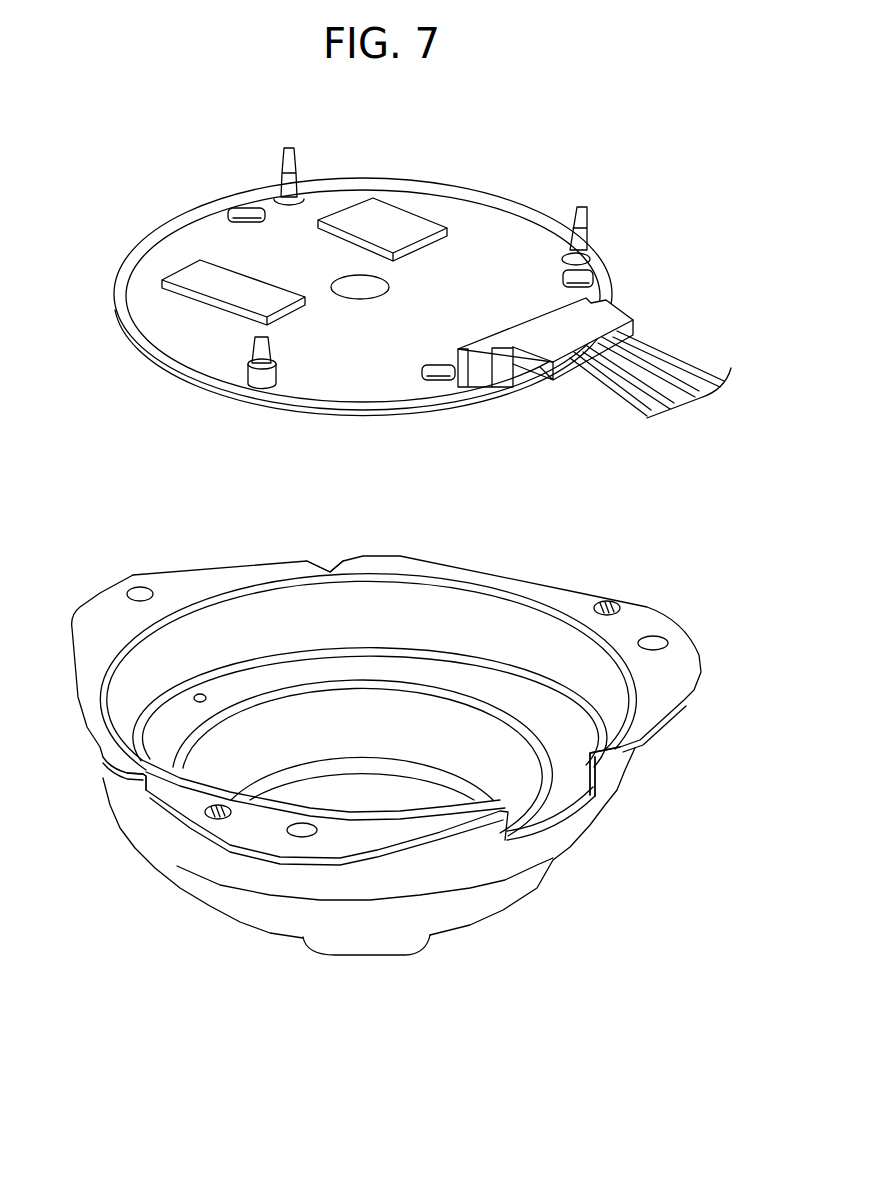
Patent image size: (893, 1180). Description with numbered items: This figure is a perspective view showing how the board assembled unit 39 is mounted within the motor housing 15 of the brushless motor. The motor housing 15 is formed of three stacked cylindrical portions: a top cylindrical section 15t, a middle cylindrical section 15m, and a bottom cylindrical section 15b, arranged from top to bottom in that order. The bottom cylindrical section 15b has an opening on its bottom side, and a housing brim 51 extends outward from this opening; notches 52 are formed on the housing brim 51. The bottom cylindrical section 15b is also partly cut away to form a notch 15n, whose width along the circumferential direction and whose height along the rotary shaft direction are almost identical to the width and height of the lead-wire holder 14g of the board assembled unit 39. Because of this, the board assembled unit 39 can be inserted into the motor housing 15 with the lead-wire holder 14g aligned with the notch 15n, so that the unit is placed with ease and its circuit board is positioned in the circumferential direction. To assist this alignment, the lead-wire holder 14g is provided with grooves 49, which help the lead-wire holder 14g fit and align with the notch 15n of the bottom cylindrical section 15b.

The board assembled unit 39 is at (525, 203).
The grooves 49 is at (590, 302).
The lead-wire holder 14g is at (617, 322).
The motor housing 15 is at (582, 593).
The housing brim 51 is at (187, 577).
The notches 52 is at (337, 570).
The bottom cylindrical section 15b is at (610, 770).
The notch 15n is at (570, 820).
The middle cylindrical section 15m is at (527, 880).
The top cylindrical section 15t is at (420, 943).